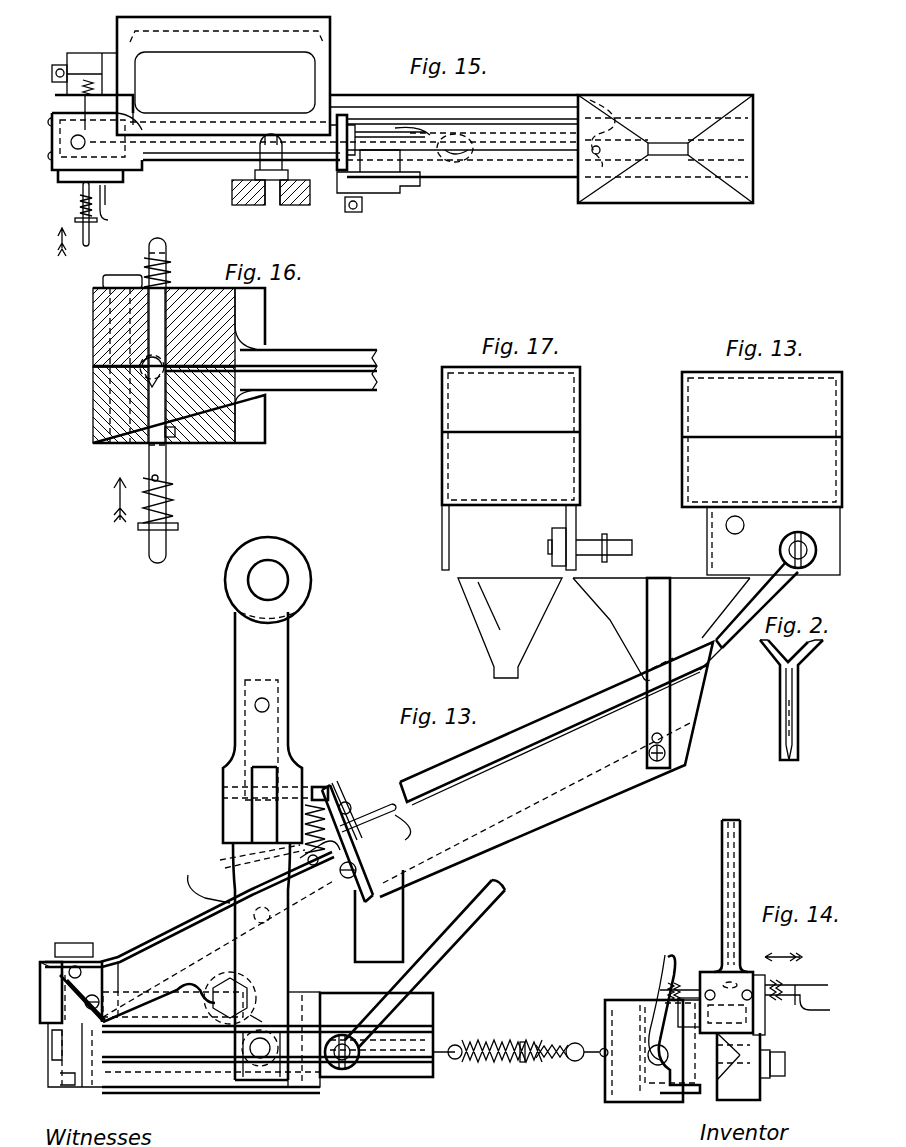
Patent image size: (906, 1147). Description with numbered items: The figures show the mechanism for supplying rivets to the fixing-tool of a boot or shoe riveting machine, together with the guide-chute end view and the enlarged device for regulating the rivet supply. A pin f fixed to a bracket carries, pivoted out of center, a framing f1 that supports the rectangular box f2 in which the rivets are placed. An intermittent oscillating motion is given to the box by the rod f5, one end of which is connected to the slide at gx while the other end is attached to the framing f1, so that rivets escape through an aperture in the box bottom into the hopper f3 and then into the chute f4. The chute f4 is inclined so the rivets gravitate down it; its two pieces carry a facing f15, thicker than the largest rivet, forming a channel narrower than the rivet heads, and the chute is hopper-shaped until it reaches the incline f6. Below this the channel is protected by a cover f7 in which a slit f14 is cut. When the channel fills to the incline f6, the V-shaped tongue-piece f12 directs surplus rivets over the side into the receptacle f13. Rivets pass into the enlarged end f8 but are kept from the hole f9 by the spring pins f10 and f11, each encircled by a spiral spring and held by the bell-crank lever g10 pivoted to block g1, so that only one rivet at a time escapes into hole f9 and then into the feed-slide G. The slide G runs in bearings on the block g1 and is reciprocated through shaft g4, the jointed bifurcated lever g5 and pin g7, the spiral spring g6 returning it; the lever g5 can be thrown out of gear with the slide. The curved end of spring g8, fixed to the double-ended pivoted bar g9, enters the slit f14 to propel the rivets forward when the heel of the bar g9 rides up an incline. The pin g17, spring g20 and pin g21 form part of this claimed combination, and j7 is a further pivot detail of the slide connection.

In FIG. 17, the pin f is at (632, 548).
In FIG. 13, the pin f is at (798, 542).
In FIG. 17, the framing f1 is at (449, 520).
In FIG. 13, the framing f1 is at (773, 541).
In FIG. 17, the rectangular box f2 is at (511, 436).
In FIG. 13, the rectangular box f2 is at (762, 439).
In FIG. 15, the hopper f3 is at (668, 203).
In FIG. 17, the hopper f3 is at (510, 628).
In FIG. 13, the hopper f3 is at (661, 629).
In FIG. 15, the chute f4 is at (523, 178).
In FIG. 16, the chute f4 is at (345, 342).
In FIG. 2, the chute f4 is at (780, 702).
In FIG. 13, the chute f4 is at (379, 829).
In FIG. 15, the rod f5 is at (395, 186).
In FIG. 13, the rod f5 is at (780, 583).
In FIG. 13, the incline f6 is at (415, 820).
In FIG. 15, the cover f7 is at (182, 156).
In FIG. 13, the cover f7 is at (338, 783).
In FIG. 14, the cover f7 is at (722, 868).
In FIG. 15, the enlarged end f8 is at (55, 180).
In FIG. 16, the enlarged end f8 is at (93, 335).
In FIG. 13, the enlarged end f8 is at (44, 1075).
In FIG. 16, the hole f9 is at (138, 374).
In FIG. 13, the hole f9 is at (46, 945).
In FIG. 15, the spring-pin f10 is at (90, 232).
In FIG. 16, the spring-pin f10 is at (166, 462).
In FIG. 13, the spring-pin f10 is at (90, 943).
In FIG. 14, the spring-pin f10 is at (812, 985).
In FIG. 15, the spring-pin f11 is at (70, 64).
In FIG. 16, the spring-pin f11 is at (169, 246).
In FIG. 14, the spring-pin f11 is at (700, 975).
In FIG. 15, the V-shaped tongue-piece f12 is at (390, 140).
In FIG. 13, the V-shaped tongue-piece f12 is at (368, 820).
In FIG. 13, the box or receptacle f13 is at (348, 930).
In FIG. 15, the slit f14 is at (255, 148).
In FIG. 15, the facing f15 is at (558, 165).
In FIG. 2, the facing f15 is at (789, 760).
In FIG. 13, the facing f15 is at (612, 785).
In FIG. 15, the feed-slide G is at (337, 162).
In FIG. 13, the feed-slide G is at (408, 1077).
In FIG. 14, the feed-slide G is at (745, 1070).
In FIG. 15, the block g1 is at (223, 76).
In FIG. 13, the block g1 is at (178, 1105).
In FIG. 14, the block g1 is at (636, 1095).
In FIG. 13, the shaft g4 is at (268, 580).
In FIG. 15, the jointed bifurcated lever g5 is at (245, 205).
In FIG. 13, the jointed bifurcated lever g5 is at (293, 1105).
In FIG. 13, the spiral spring g6 is at (495, 1042).
In FIG. 15, the pin g7 is at (350, 212).
In FIG. 14, the pin g7 is at (783, 1064).
In FIG. 13, the spring g8 is at (355, 836).
In FIG. 13, the double-ended pivoted bar g9 is at (212, 880).
In FIG. 15, the bell-crank lever g10 is at (80, 72).
In FIG. 13, the bell-crank lever g10 is at (65, 943).
In FIG. 14, the bell-crank lever g10 is at (665, 960).
In FIG. 15, the pin g17 is at (274, 205).
In FIG. 13, the spring g20 is at (320, 787).
In FIG. 13, the pin g21 is at (222, 793).
In FIG. 13, the connection point on slide gx is at (342, 1069).
In FIG. 13, the pin j7 is at (260, 1058).